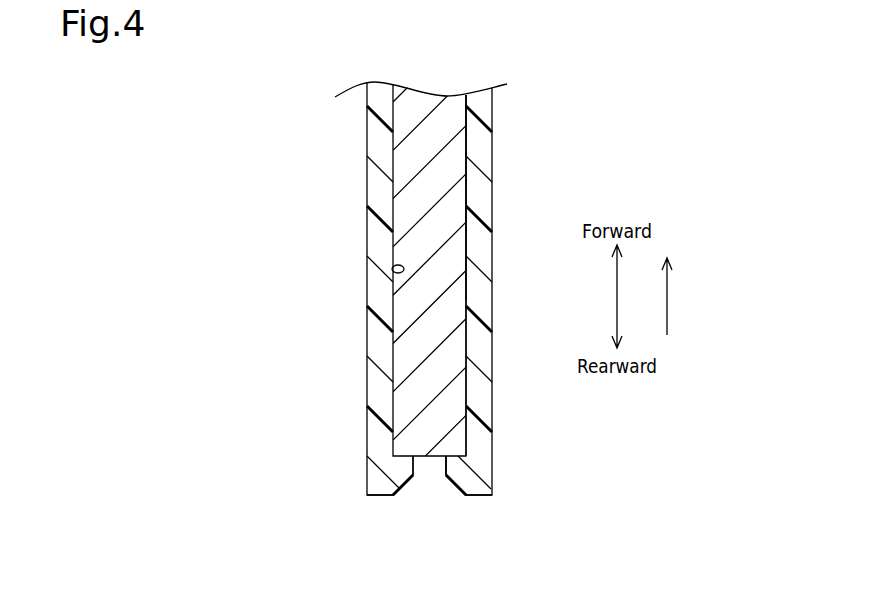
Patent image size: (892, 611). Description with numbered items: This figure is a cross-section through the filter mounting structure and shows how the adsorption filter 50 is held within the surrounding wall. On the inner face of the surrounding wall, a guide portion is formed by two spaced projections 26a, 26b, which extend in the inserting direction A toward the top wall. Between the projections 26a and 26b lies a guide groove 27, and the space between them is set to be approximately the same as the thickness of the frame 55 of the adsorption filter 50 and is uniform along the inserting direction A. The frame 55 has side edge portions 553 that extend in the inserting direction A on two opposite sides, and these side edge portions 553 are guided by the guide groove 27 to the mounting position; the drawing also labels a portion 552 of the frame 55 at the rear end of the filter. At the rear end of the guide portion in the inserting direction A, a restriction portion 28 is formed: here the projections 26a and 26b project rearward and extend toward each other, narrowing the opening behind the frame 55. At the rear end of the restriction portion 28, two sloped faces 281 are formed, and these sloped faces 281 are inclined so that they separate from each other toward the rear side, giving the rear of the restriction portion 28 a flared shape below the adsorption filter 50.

The adsorption filter 50 is at (432, 96).
The projection 26a is at (492, 247).
The projection 26b is at (367, 232).
The guide groove 27 is at (395, 270).
The side edge portion 553 is at (467, 143).
The bottom lip portion 552 is at (454, 457).
The frame 55 is at (537, 288).
The sloped face 281 is at (403, 495).
The restriction portion 28 is at (443, 458).
The inserting direction A is at (668, 300).